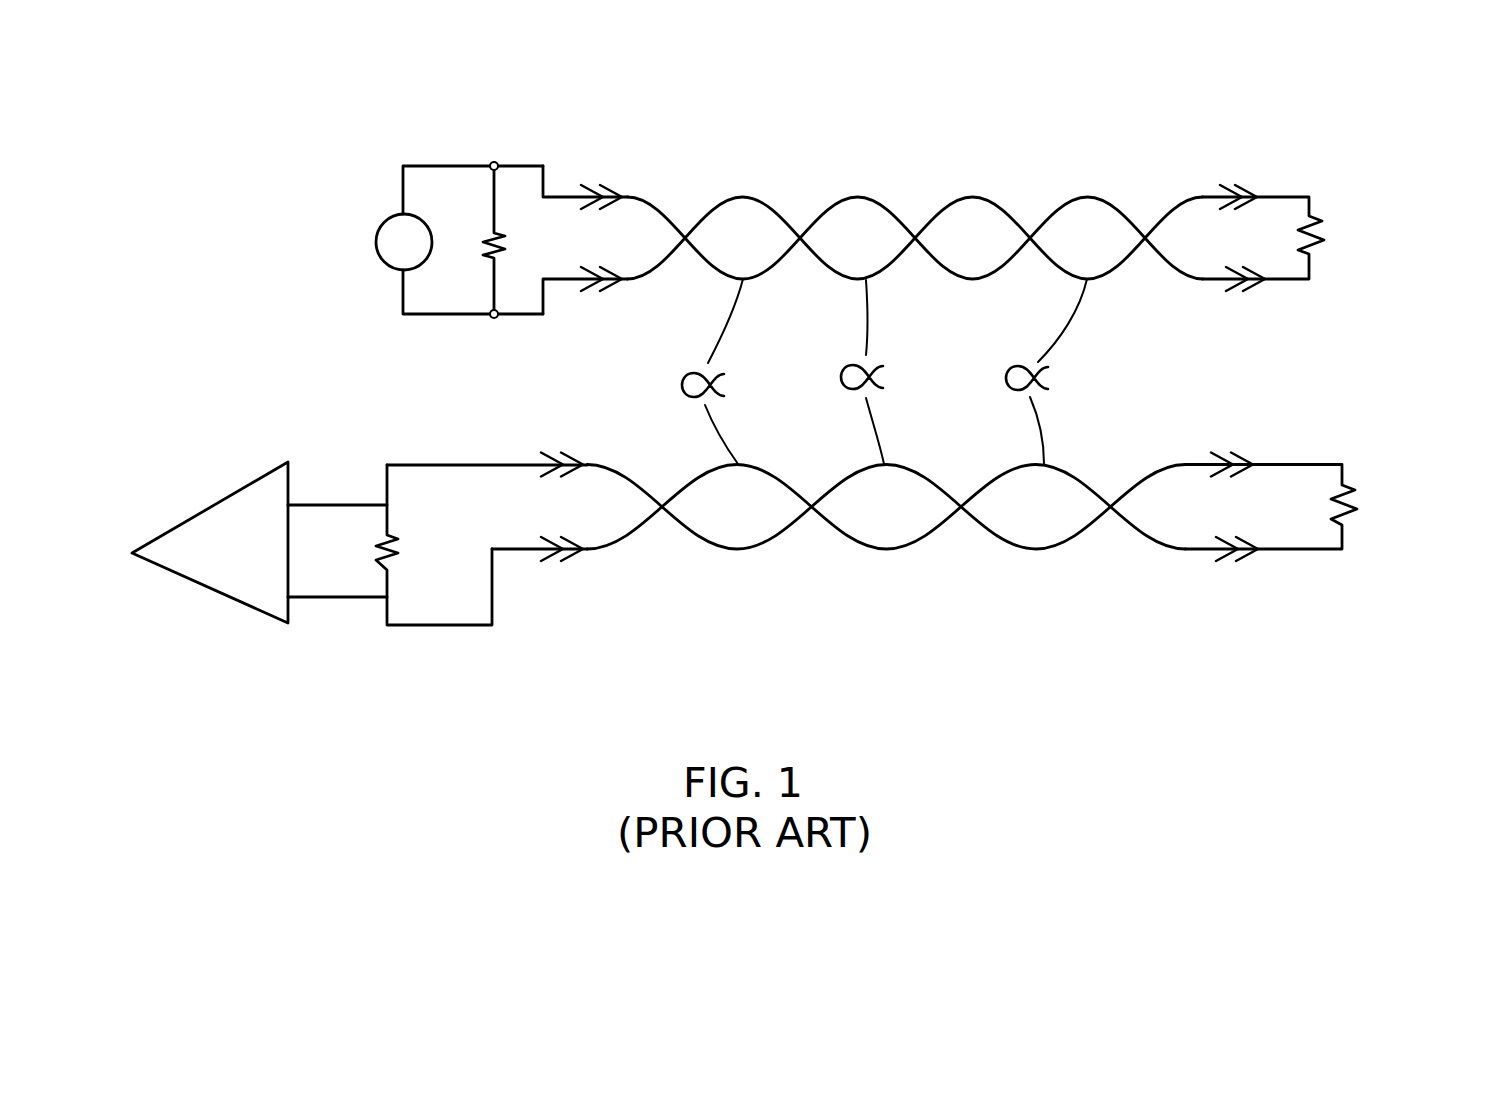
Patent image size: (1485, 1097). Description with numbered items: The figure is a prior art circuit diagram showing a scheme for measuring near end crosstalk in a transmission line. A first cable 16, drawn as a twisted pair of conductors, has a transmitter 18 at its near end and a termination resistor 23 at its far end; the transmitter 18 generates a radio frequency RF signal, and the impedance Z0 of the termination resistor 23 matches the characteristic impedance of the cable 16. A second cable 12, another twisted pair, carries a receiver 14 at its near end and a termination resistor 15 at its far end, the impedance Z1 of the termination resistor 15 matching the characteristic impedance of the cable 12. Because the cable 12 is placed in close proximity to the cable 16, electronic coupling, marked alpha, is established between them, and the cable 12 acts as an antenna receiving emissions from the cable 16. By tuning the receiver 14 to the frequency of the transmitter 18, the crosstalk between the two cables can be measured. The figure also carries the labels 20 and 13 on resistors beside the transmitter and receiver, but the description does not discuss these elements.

The second cable 12 is at (738, 549).
The impedance matching resistor network 13 is at (448, 627).
The receiver 14 is at (195, 515).
The termination resistor 15 is at (1346, 522).
The first cable 16 is at (974, 197).
The transmitter 18 is at (374, 240).
The source resistor R0 20 is at (487, 237).
The termination resistor 23 is at (1315, 222).